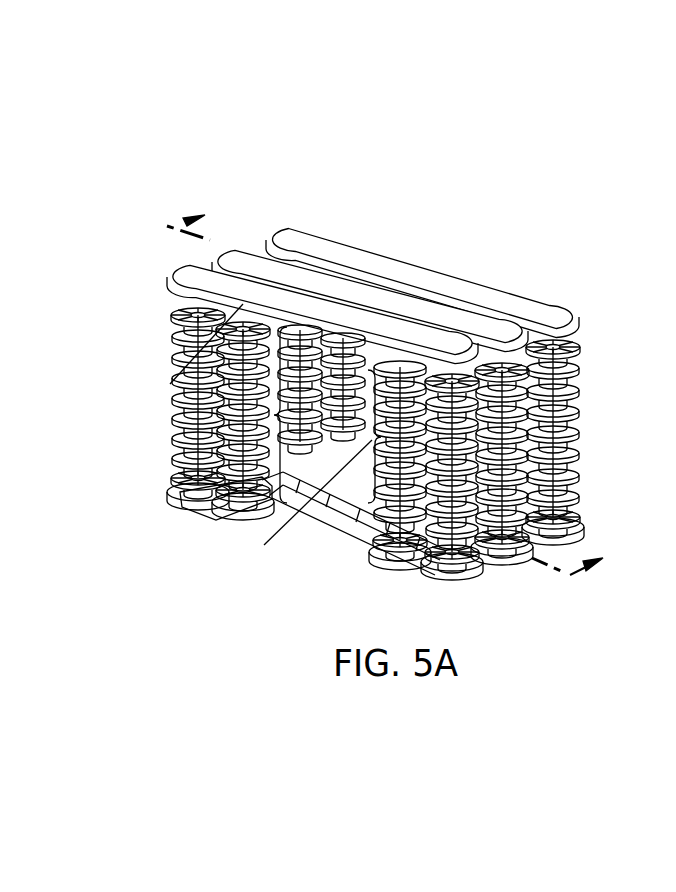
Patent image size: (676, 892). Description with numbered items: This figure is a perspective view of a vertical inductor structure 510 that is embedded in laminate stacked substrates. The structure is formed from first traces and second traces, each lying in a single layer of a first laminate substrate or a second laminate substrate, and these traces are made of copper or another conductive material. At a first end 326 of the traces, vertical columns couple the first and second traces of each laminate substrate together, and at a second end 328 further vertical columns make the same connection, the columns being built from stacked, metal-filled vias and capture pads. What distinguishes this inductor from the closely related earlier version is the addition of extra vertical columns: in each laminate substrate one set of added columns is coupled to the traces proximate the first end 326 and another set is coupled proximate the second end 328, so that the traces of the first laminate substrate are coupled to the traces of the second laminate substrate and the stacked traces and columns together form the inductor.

The vertical inductor structure 510 is at (492, 139).
The first end 326 is at (285, 208).
The second end 328 is at (494, 606).